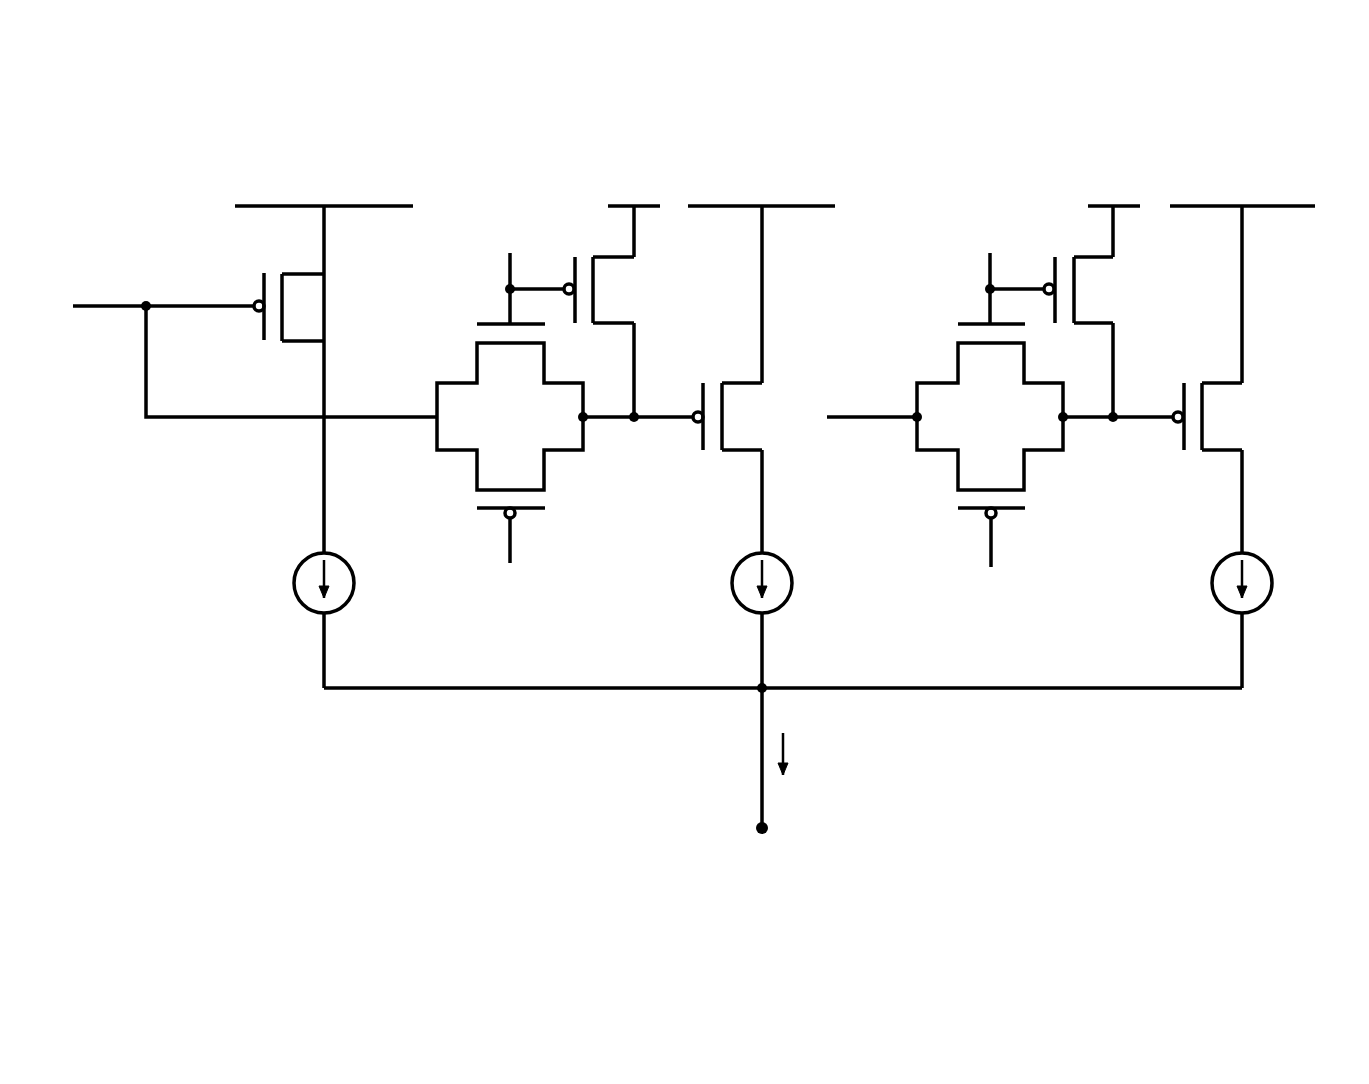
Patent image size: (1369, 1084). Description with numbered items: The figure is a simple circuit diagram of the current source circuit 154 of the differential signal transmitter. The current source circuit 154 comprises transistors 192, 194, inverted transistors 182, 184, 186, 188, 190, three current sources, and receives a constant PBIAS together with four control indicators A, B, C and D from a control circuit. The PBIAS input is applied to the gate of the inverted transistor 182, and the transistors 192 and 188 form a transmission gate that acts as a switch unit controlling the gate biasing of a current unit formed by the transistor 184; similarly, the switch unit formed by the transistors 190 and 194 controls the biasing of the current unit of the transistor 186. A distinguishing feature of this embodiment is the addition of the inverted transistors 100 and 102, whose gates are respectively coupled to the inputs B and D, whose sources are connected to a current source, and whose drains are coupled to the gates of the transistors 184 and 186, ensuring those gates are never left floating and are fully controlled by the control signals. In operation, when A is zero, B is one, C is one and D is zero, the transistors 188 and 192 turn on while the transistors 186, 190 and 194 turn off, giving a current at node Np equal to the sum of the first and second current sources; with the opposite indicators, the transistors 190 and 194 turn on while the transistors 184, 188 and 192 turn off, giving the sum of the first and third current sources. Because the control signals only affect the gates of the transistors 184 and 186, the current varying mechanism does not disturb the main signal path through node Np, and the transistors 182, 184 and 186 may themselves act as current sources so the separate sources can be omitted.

The current source circuit 154 is at (700, 508).
The inverted transistor 182 is at (250, 300).
The inverted transistor 100 is at (557, 270).
The inverted transistor 102 is at (1038, 270).
The inverted transistor 184 is at (690, 437).
The inverted transistor 186 is at (1171, 437).
The inverted transistor 188 is at (483, 532).
The inverted transistor 190 is at (965, 532).
The transistor 192 is at (498, 312).
The transistor 194 is at (980, 313).